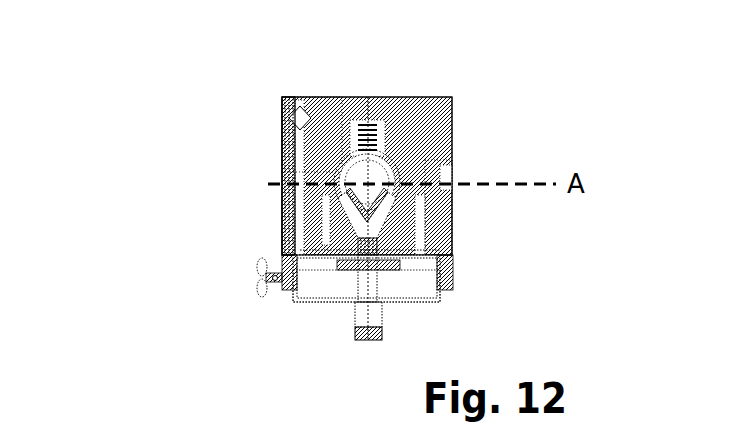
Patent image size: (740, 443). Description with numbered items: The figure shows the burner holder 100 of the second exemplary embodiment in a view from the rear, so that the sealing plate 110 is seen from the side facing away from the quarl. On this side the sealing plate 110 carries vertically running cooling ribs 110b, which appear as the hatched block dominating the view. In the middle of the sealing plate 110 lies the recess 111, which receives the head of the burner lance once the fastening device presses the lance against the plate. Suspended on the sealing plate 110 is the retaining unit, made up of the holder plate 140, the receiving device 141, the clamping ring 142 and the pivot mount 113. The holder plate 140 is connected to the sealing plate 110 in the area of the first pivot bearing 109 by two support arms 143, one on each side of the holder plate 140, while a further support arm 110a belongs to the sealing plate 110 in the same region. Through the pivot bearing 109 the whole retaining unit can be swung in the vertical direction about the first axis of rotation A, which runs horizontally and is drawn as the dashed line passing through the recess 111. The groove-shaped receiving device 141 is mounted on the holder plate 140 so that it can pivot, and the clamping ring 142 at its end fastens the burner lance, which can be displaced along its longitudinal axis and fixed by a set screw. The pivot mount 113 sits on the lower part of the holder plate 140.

The burner holder 100 is at (556, 241).
The sealing plate 110 is at (402, 100).
The cooling rib 110b is at (325, 110).
The support arm 110a is at (199, 177).
The pivot bearing 109 is at (287, 185).
The recess 111 is at (378, 170).
The clamping ring 142 is at (332, 168).
The support arm 143 is at (435, 200).
The receiving device 141 is at (343, 220).
The holder plate 140 is at (416, 300).
The pivot mount 113 is at (332, 285).